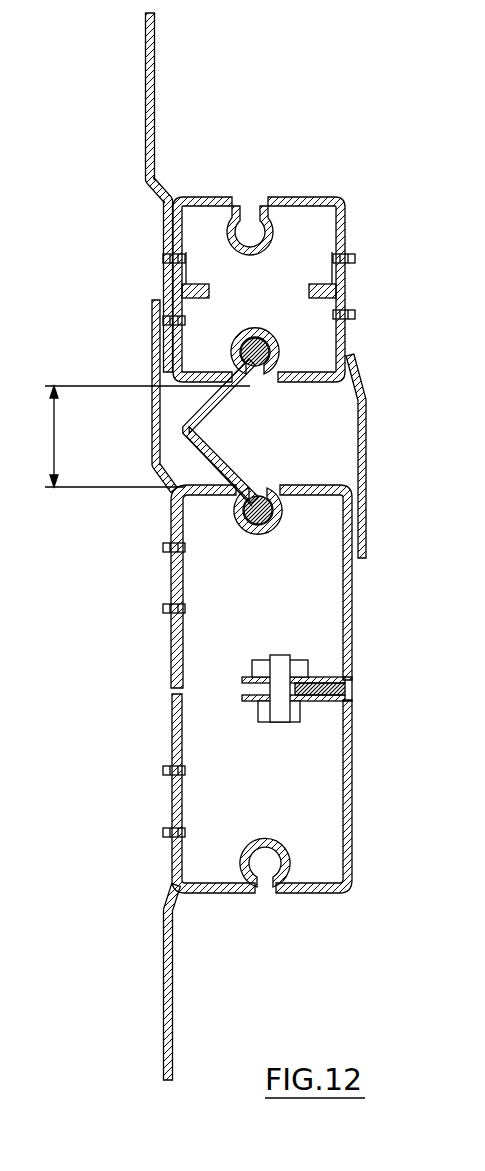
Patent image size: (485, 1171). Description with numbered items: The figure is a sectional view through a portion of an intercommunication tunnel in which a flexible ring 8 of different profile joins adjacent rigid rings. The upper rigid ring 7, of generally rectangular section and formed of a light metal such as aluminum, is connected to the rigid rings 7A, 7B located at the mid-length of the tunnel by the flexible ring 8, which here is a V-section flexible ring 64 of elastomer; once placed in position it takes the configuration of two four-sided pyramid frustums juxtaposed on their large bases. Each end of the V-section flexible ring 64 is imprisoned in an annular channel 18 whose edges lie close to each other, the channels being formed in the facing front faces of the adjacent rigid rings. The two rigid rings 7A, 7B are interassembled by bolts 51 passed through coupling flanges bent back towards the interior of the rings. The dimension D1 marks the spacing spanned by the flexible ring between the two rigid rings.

The rigid ring 7 is at (352, 215).
The annular channel 18 is at (262, 350).
The V-section flexible ring 64 is at (236, 400).
The flexible ring 8 is at (263, 470).
The rigid ring 7A is at (355, 624).
The rigid ring 7B is at (355, 805).
The bolt 51 is at (284, 728).
The distance D1 is at (147, 436).